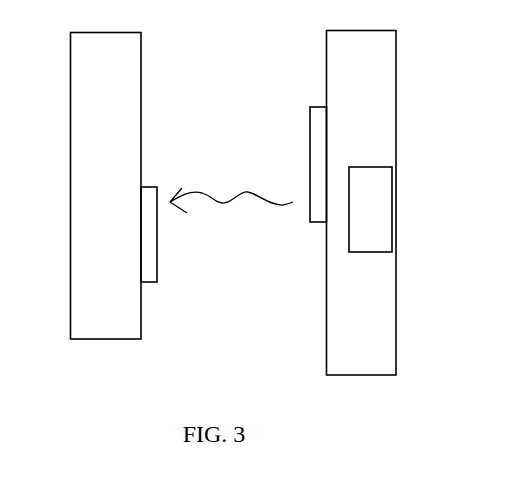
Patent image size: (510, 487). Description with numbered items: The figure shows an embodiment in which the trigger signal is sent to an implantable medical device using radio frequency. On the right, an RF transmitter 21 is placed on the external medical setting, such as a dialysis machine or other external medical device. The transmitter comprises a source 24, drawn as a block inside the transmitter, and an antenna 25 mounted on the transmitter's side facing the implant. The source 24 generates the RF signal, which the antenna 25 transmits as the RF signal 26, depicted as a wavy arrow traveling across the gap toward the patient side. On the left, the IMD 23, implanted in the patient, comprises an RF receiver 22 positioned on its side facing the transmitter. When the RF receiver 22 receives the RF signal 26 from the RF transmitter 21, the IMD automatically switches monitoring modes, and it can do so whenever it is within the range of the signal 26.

The RF transmitter 21 is at (362, 203).
The RF receiver 22 is at (150, 271).
The IMD 23 is at (106, 186).
The source 24 is at (370, 209).
The antenna 25 is at (319, 210).
The RF signal 26 is at (231, 211).